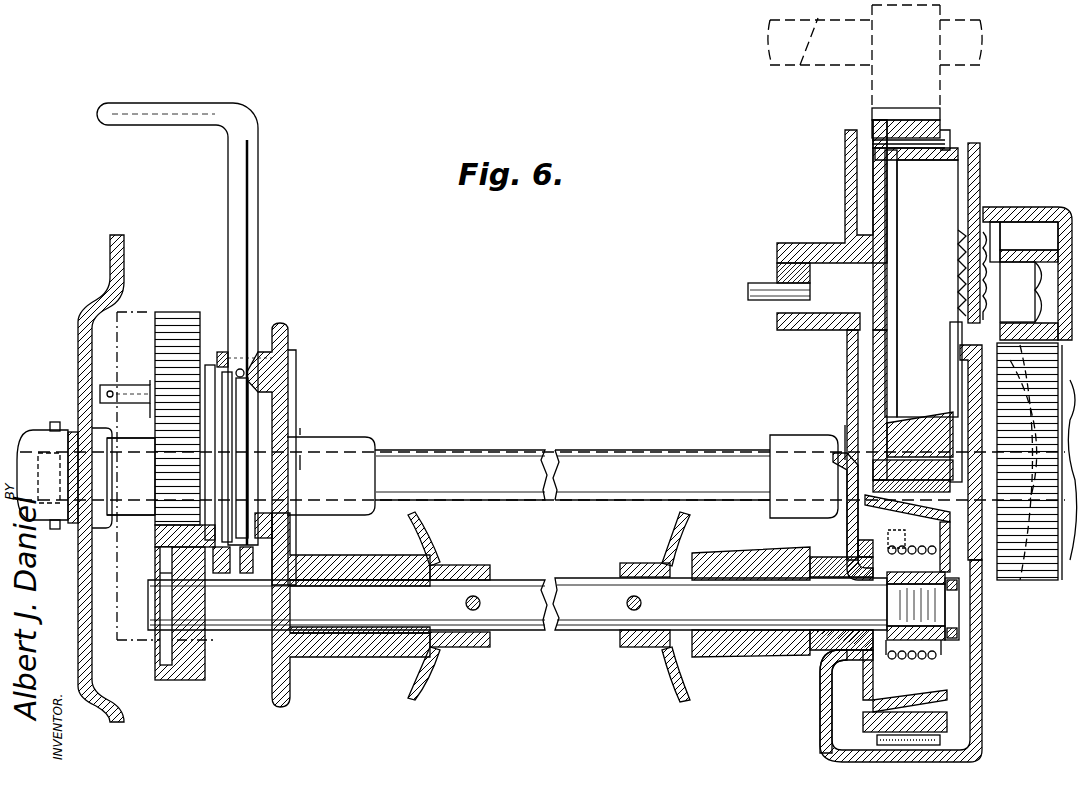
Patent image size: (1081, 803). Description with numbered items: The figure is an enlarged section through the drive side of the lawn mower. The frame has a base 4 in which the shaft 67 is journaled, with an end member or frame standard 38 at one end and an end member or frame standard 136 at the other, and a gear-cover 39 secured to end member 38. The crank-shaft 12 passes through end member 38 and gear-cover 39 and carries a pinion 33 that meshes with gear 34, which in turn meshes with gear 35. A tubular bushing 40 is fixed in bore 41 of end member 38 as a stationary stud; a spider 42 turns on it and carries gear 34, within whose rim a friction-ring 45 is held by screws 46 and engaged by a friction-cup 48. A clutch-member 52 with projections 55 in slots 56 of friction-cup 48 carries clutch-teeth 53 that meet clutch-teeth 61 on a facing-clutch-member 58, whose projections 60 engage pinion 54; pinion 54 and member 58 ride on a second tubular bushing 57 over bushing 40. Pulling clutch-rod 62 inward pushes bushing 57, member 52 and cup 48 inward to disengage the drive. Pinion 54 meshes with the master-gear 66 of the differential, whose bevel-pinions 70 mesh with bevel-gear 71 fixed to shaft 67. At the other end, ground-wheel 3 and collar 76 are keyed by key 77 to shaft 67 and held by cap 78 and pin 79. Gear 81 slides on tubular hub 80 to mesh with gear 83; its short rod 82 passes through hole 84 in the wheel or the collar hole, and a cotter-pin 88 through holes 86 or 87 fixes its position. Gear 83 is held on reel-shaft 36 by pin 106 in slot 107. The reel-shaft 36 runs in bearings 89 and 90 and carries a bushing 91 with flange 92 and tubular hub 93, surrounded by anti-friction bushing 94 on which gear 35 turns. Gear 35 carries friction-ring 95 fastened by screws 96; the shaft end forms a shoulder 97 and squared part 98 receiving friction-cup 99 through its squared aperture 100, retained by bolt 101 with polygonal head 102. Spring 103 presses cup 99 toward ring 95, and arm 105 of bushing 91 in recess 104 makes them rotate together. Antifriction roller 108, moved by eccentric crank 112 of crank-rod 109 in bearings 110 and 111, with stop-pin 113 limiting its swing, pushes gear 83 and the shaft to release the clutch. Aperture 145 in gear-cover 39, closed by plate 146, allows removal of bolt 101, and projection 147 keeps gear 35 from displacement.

The ground-wheel 3 is at (110, 242).
The base 4 is at (302, 437).
The crank-shaft 12 is at (792, 65).
The pinion 33 is at (885, 73).
The gear 34 is at (872, 118).
The gear 35 is at (838, 718).
The reel-shaft 36 is at (582, 632).
The end member of the frame 38 is at (846, 196).
The gear-cover 39 is at (980, 152).
The tubular bushing 40 is at (777, 272).
The bore 41 is at (790, 262).
The spider 42 is at (885, 175).
The friction-ring 45 is at (928, 160).
The screws 46 is at (950, 137).
The friction-cup 48 is at (927, 288).
The clutch-member 52 is at (960, 240).
The clutch-teeth 53 is at (985, 252).
The pinion 54 is at (1022, 235).
The projections 55 is at (940, 305).
The slots 56 is at (960, 310).
The tubular bushing 57 is at (1046, 260).
The facing-clutch-member 58 is at (985, 308).
The projections 60 is at (997, 235).
The clutch-teeth 61 is at (975, 290).
The clutch-rod 62 is at (760, 302).
The master-gear 66 is at (1040, 640).
The shaft 67 is at (614, 452).
The bevel-pinions 70 is at (1040, 385).
The bevel-gear 71 is at (1000, 370).
The collar 76 is at (272, 422).
The key 77 is at (133, 455).
The cap 78 is at (26, 458).
The pin 79 is at (55, 424).
The tubular hub 80 is at (134, 512).
The gear 81 is at (177, 315).
The short rod 82 is at (140, 412).
The gear 83 is at (203, 668).
The hole 84 is at (78, 400).
The hole 86 is at (112, 392).
The hole 87 is at (246, 398).
The cotter-pin 88 is at (234, 396).
The bearing 89 is at (367, 637).
The bearing 90 is at (757, 640).
The bushing 91 is at (893, 660).
The flange 92 is at (858, 690).
The tubular hub 93 is at (820, 636).
The anti-friction bushing 94 is at (838, 634).
The friction-ring 95 is at (925, 742).
The screws 96 is at (870, 482).
The shoulder 97 is at (887, 590).
The squared part 98 is at (905, 600).
The friction-cup 99 is at (950, 696).
The squared aperture 100 is at (924, 658).
The bolt 101 is at (951, 577).
The polygonal-shaped head 102 is at (960, 640).
The spring 103 is at (910, 536).
The recess 104 is at (870, 520).
The arm 105 is at (900, 532).
The pin 106 is at (162, 556).
The slot 107 is at (160, 574).
The antifriction roller 108 is at (253, 575).
The crank-rod 109 is at (258, 168).
The bearing 110 is at (256, 373).
The bearing 111 is at (268, 448).
The eccentric crank 112 is at (233, 574).
The stop-pin 113 is at (262, 372).
The end member or frame standard 136 is at (286, 330).
The aperture 145 is at (1000, 640).
The plate 146 is at (1030, 640).
The projection 147 is at (930, 445).